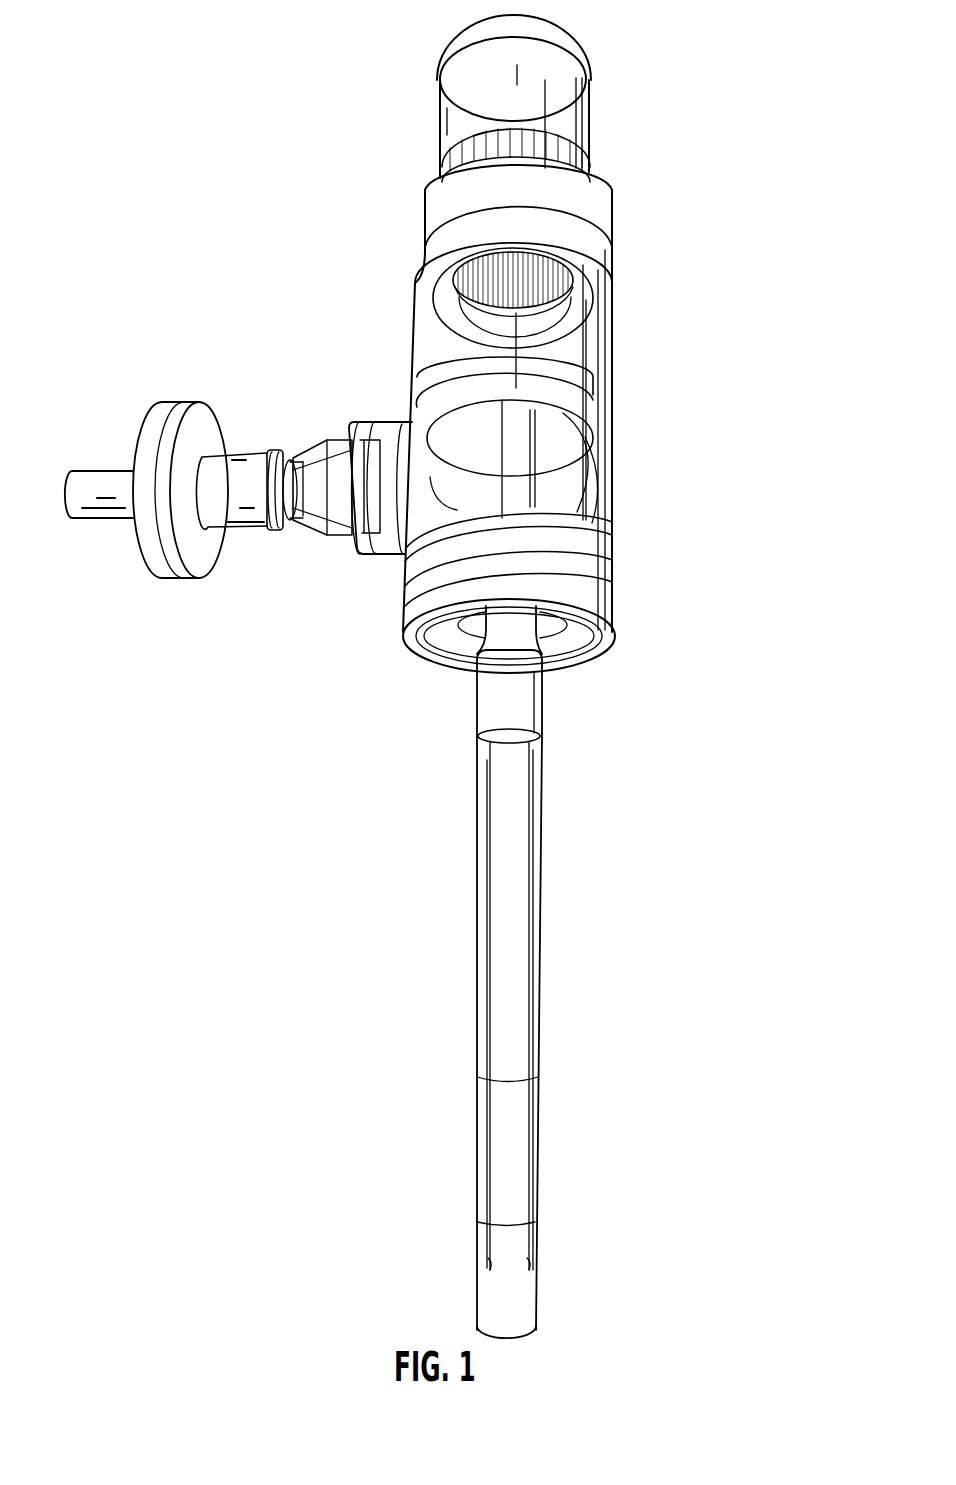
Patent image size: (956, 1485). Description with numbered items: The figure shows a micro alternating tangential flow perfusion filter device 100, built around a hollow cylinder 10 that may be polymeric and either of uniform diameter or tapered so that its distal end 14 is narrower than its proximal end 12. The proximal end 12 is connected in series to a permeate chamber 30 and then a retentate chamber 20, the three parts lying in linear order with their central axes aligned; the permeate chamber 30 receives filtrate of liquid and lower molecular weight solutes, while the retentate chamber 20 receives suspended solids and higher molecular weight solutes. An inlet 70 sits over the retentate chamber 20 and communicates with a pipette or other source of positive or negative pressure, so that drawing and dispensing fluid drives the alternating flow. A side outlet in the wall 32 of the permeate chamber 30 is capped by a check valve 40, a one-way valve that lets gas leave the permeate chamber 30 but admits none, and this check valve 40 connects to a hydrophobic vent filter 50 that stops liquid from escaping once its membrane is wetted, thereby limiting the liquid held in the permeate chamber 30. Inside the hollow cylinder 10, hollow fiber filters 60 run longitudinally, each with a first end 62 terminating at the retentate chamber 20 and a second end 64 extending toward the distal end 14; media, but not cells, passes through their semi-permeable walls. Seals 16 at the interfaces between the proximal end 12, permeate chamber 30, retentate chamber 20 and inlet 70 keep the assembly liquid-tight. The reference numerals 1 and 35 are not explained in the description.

The micro alternating tangential flow perfusion filter device 100 is at (292, 953).
The inlet 70 is at (563, 126).
The housing 1 is at (580, 198).
The retentate chamber 20 is at (585, 312).
The seal 16 is at (587, 412).
The permeate chamber 30 is at (575, 475).
The wall 32 is at (410, 437).
The check valve 40 is at (320, 445).
The valve body 35 is at (410, 480).
The hydrophobic vent filter 50 is at (200, 555).
The proximal end 12 is at (530, 698).
The first end 62 is at (532, 698).
The hollow fiber filters 60 is at (535, 787).
The hollow cylinder 10 is at (532, 1090).
The distal end 14 is at (517, 1257).
The second end 64 is at (520, 1306).